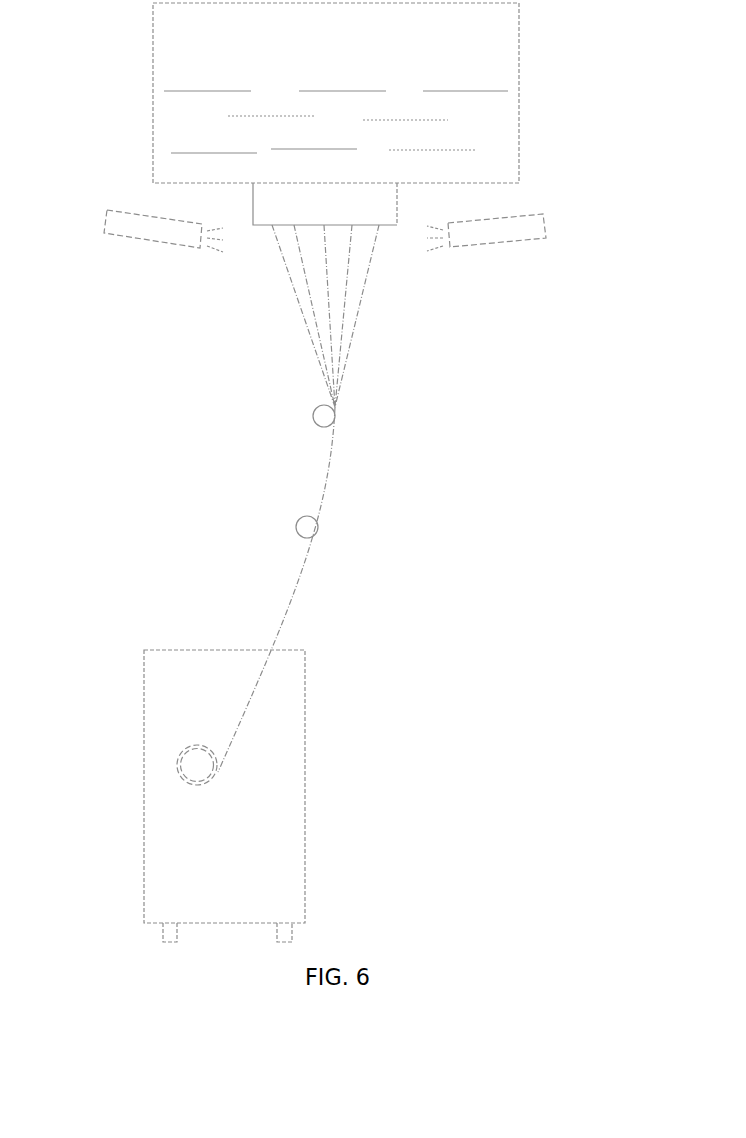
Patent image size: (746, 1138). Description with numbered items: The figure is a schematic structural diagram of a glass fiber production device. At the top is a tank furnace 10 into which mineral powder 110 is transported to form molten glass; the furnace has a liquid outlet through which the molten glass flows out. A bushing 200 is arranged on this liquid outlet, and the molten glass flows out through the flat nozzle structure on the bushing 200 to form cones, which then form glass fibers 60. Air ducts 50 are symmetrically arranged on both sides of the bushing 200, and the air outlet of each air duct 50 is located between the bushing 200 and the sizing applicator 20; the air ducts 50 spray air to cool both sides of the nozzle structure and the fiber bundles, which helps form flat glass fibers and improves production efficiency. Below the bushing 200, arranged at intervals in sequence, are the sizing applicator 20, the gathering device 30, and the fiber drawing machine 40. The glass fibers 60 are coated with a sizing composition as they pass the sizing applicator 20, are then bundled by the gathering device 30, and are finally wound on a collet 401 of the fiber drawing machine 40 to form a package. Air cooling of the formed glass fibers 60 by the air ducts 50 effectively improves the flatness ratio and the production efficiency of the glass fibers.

The tank furnace 10 is at (519, 42).
The mineral powder 110 is at (505, 91).
The bushing 200 is at (267, 208).
The air duct 50 is at (515, 230).
The glass fibers 60 is at (353, 340).
The sizing applicator 20 is at (336, 410).
The gathering device 30 is at (310, 527).
The fiber drawing machine 40 is at (285, 754).
The collet 401 is at (183, 763).